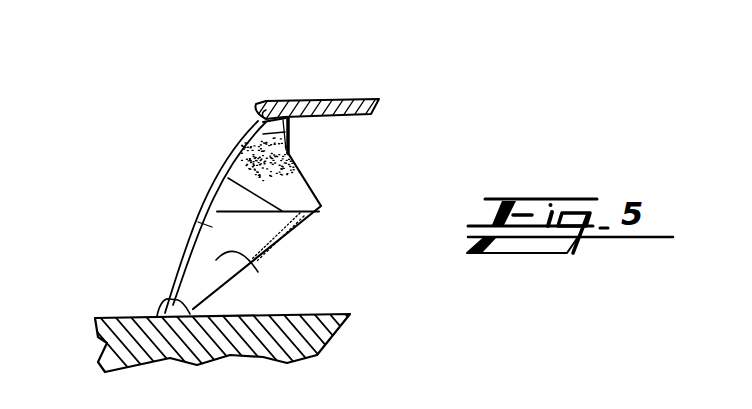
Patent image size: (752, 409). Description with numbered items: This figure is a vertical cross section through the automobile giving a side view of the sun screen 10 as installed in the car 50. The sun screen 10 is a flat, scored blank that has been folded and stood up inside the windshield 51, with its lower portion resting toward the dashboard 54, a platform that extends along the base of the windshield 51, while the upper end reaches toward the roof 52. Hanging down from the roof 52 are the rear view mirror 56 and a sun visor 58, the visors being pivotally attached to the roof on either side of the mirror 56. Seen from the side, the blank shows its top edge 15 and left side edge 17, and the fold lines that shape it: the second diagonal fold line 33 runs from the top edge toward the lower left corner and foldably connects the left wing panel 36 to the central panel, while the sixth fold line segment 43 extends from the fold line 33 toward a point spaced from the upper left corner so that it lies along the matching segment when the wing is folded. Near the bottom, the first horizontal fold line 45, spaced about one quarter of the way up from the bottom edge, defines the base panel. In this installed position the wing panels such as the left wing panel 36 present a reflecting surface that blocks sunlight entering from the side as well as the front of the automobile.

The sun screen 10 is at (340, 222).
The top edge 15 is at (303, 166).
The left side edge 17 is at (280, 249).
The second diagonal fold line 33 is at (198, 222).
The left wing panel 36 is at (300, 197).
The sixth fold line segment 43 is at (266, 214).
The first horizontal fold line 45 is at (249, 248).
The car 50 is at (163, 219).
The windshield 51 is at (219, 177).
The roof 52 is at (323, 99).
The dashboard 54 is at (329, 313).
The rear view mirror 56 is at (248, 157).
The sun visor 58 is at (290, 138).